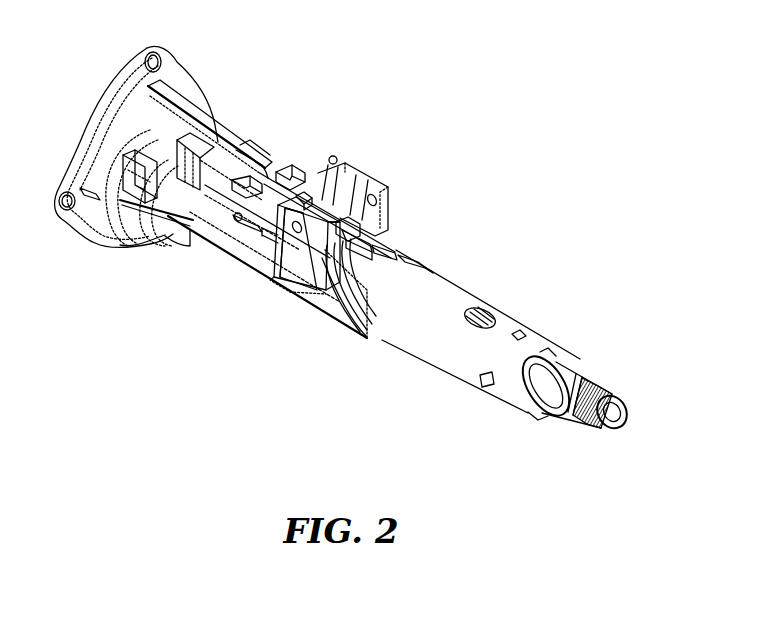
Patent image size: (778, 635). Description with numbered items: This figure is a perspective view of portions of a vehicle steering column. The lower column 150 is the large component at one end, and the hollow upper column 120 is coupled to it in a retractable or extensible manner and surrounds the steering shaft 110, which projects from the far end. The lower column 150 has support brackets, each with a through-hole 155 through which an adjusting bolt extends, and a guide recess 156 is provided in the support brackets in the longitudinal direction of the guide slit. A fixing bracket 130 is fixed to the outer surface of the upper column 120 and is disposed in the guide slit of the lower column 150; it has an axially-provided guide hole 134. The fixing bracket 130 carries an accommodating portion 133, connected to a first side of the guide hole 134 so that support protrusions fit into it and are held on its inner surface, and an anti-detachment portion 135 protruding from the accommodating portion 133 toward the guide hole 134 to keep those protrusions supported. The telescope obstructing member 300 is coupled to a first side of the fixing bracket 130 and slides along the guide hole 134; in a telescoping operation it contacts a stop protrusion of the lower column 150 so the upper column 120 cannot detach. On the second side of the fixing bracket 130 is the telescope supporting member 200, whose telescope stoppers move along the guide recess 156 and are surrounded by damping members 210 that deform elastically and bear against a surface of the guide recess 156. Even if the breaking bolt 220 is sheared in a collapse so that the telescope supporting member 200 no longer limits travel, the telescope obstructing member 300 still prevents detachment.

The steering shaft 110 is at (580, 377).
The upper column 120 is at (452, 293).
The fixing bracket 130 is at (320, 277).
The accommodating portion 133 is at (393, 232).
The guide hole 134 is at (347, 193).
The anti-detachment portion 135 is at (370, 285).
The lower column 150 is at (247, 260).
The through-hole 155 is at (288, 232).
The guide recess 156 is at (262, 172).
The telescope supporting member 200 is at (267, 183).
The damping member 210 is at (280, 173).
The breaking bolt 220 is at (300, 196).
The telescope obstructing member 300 is at (350, 233).